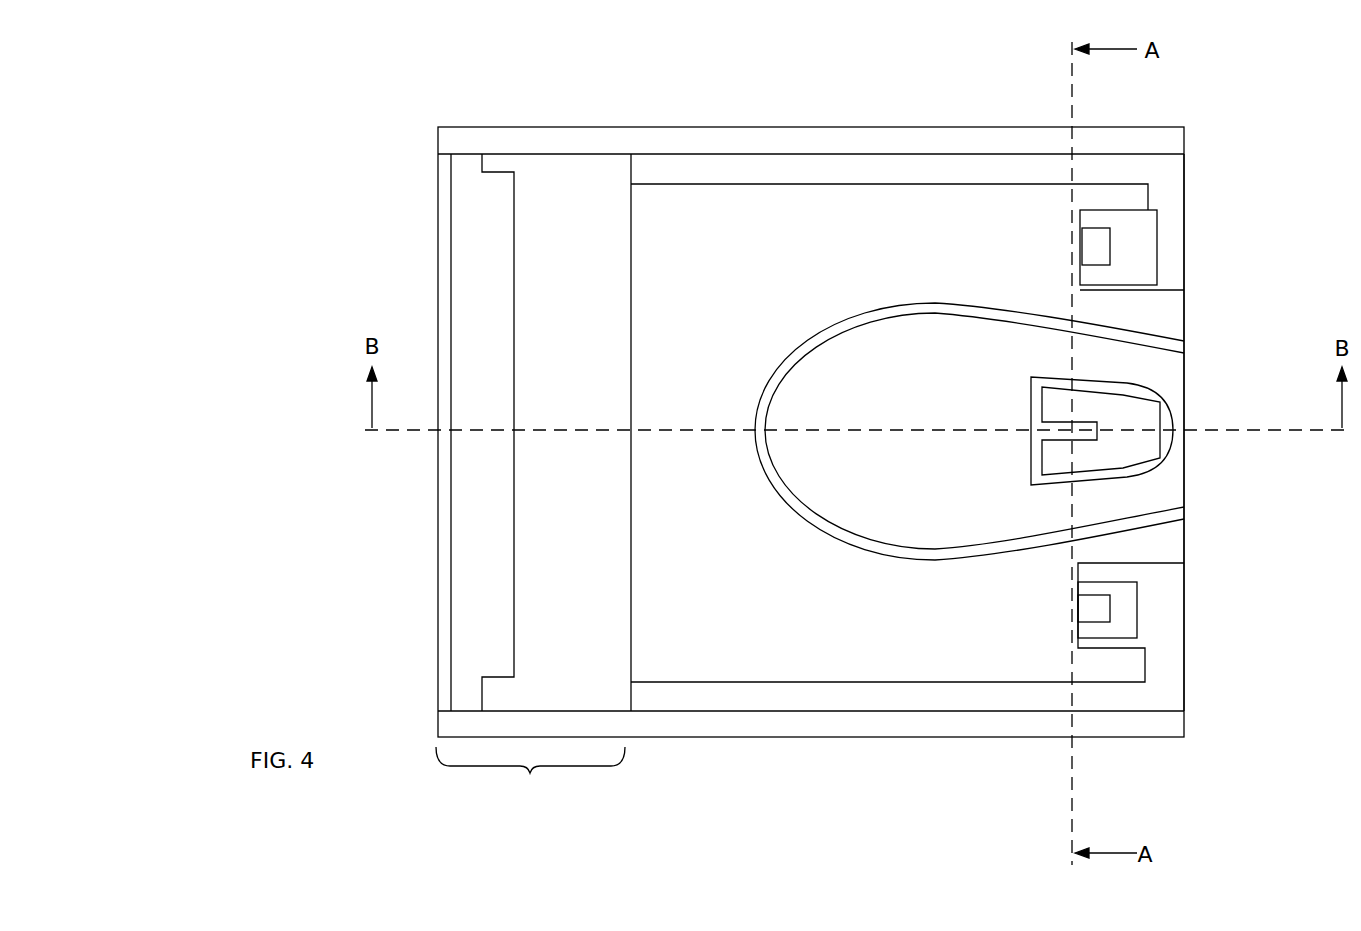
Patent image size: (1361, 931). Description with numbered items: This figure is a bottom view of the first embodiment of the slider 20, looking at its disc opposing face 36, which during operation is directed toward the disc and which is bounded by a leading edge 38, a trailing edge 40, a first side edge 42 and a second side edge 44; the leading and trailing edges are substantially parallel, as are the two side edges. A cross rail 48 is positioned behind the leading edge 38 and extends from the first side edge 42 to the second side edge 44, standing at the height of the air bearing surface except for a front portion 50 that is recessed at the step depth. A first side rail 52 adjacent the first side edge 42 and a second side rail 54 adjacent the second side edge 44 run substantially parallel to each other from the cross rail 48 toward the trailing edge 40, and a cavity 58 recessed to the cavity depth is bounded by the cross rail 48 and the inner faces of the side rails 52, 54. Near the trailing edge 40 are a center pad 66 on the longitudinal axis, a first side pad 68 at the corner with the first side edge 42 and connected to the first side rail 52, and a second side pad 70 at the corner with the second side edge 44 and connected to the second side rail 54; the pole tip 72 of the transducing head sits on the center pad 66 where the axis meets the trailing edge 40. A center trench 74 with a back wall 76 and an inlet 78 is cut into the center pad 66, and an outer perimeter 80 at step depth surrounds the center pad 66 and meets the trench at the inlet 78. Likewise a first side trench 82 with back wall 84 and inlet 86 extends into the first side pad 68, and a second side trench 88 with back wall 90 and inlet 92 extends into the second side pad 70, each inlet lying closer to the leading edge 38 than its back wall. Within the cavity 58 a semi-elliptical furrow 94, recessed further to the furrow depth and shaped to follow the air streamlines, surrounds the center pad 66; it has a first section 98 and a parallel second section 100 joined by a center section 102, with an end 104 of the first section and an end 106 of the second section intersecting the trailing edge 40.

The slider 20 is at (347, 192).
The disc opposing face 36 is at (556, 182).
The leading edge 38 is at (445, 473).
The trailing edge 40 is at (1183, 552).
The first side edge 42 is at (665, 128).
The second side edge 44 is at (755, 739).
The cross rail 48 is at (530, 777).
The front portion 50 is at (480, 550).
The first side rail 52 is at (737, 167).
The second side rail 54 is at (810, 698).
The cavity 58 is at (889, 631).
The center pad 66 is at (1143, 417).
The first side pad 68 is at (1141, 246).
The second side pad 70 is at (1129, 620).
The pole tip 72 is at (1160, 430).
The center trench 74 is at (1062, 425).
The back wall 76 is at (1097, 425).
The inlet 78 is at (1040, 430).
The outer perimeter 80 is at (1063, 483).
The first side trench 82 is at (1097, 245).
The back wall 84 is at (1110, 243).
The inlet 86 is at (1080, 237).
The second side trench 88 is at (1092, 612).
The back wall 90 is at (1110, 608).
The inlet 92 is at (1077, 608).
The furrow 94 is at (793, 345).
The first section 98 is at (1022, 317).
The second section 100 is at (997, 550).
The center section 102 is at (755, 449).
The end 104 is at (1185, 352).
The end 106 is at (1185, 509).